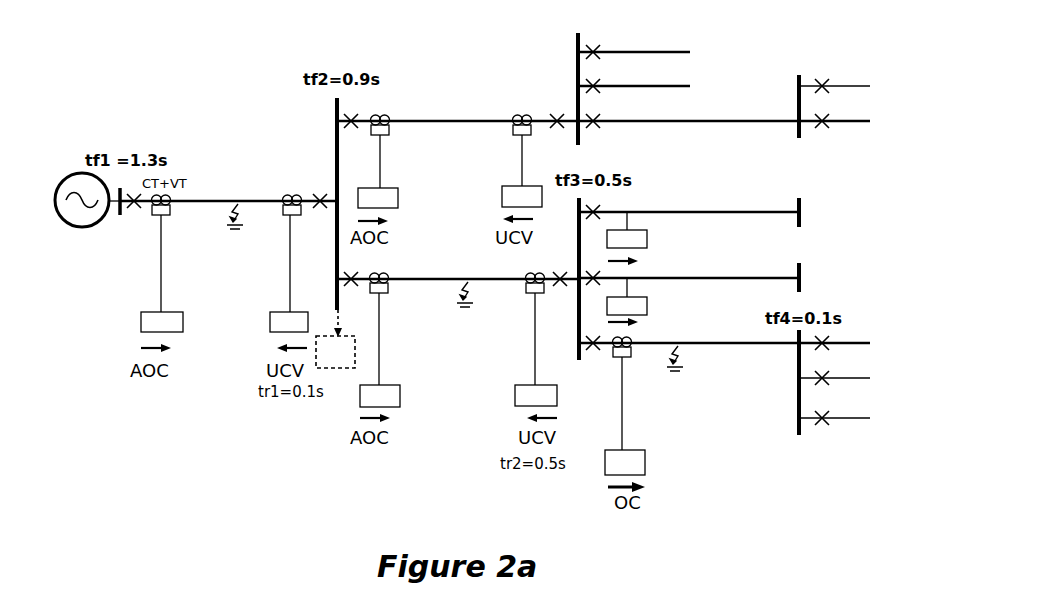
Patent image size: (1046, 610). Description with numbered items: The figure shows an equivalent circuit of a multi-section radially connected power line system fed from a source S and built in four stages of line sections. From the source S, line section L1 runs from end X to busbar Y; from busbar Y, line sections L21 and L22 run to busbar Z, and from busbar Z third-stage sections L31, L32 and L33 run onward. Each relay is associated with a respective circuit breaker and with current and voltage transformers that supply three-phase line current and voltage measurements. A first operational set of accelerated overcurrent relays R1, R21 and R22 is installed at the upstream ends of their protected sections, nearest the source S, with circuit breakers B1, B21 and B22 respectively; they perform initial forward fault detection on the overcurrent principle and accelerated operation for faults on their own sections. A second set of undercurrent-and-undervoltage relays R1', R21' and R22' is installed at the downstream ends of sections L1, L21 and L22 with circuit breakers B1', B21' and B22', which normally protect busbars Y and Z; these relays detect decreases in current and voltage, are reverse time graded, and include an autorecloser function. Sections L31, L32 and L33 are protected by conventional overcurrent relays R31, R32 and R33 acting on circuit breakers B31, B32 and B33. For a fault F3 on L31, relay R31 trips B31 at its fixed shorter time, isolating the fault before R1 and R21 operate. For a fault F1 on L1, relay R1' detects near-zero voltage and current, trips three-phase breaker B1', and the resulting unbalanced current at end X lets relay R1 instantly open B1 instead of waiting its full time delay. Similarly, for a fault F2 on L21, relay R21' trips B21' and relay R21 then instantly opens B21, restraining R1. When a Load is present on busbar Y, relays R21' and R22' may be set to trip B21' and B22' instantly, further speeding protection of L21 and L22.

The source S is at (87, 211).
The end X is at (122, 219).
The busbar Y is at (321, 204).
The busbar Z is at (577, 297).
The line section L1 is at (228, 190).
The line section L21 is at (458, 265).
The line section L22 is at (457, 110).
The line section L31 is at (689, 329).
The line section L32 is at (689, 274).
The line section L33 is at (689, 210).
The circuit breaker B1 is at (137, 213).
The circuit breaker B1' is at (318, 213).
The circuit breaker B21 is at (357, 291).
The circuit breaker B21' is at (559, 291).
The circuit breaker B22 is at (357, 133).
The circuit breaker B22' is at (554, 133).
The circuit breaker B31 is at (600, 355).
The circuit breaker B32 is at (595, 287).
The circuit breaker B33 is at (595, 221).
The relay R1 is at (162, 263).
The relay R1' is at (289, 263).
The relay R21 is at (380, 340).
The relay R21' is at (536, 339).
The relay R22 is at (378, 161).
The relay R22' is at (522, 161).
The relay R31 is at (625, 406).
The relay R32 is at (627, 296).
The relay R33 is at (627, 230).
The fault F1 is at (234, 228).
The fault F2 is at (463, 305).
The fault F3 is at (677, 371).
The load Load is at (335, 339).